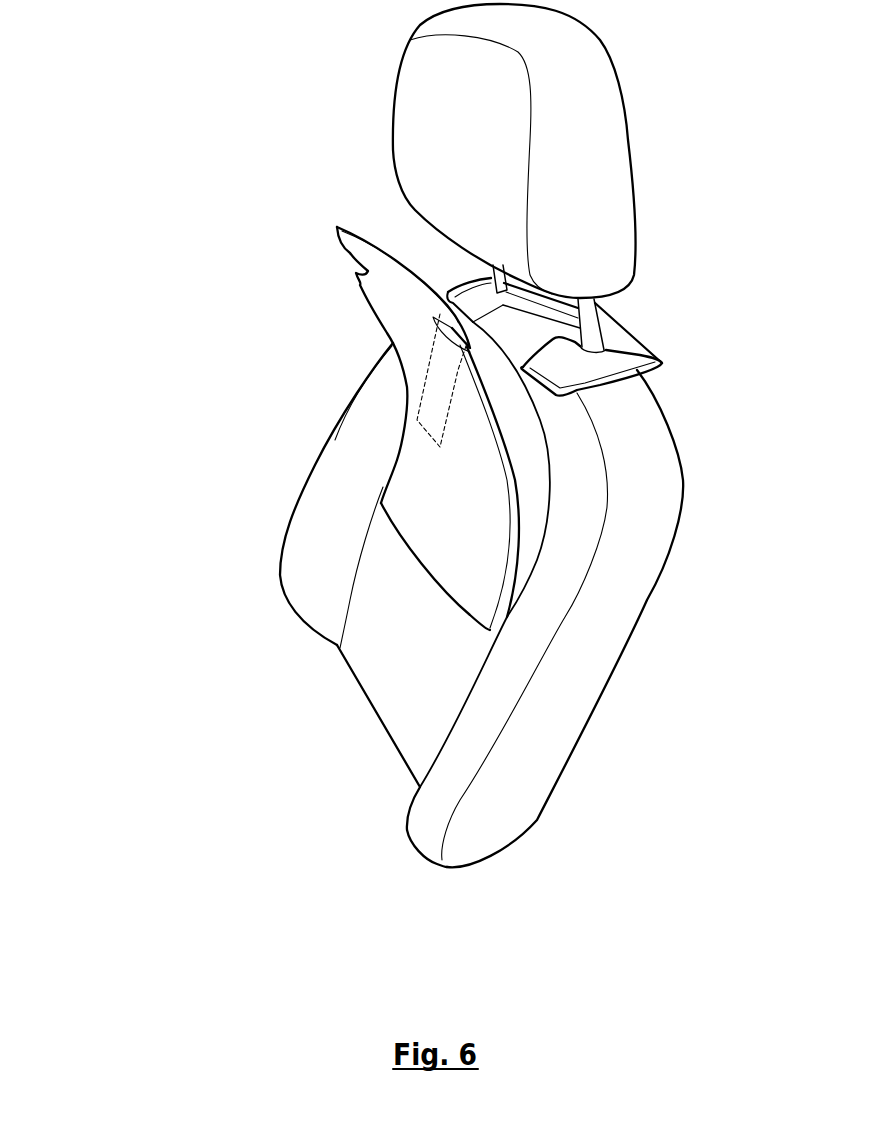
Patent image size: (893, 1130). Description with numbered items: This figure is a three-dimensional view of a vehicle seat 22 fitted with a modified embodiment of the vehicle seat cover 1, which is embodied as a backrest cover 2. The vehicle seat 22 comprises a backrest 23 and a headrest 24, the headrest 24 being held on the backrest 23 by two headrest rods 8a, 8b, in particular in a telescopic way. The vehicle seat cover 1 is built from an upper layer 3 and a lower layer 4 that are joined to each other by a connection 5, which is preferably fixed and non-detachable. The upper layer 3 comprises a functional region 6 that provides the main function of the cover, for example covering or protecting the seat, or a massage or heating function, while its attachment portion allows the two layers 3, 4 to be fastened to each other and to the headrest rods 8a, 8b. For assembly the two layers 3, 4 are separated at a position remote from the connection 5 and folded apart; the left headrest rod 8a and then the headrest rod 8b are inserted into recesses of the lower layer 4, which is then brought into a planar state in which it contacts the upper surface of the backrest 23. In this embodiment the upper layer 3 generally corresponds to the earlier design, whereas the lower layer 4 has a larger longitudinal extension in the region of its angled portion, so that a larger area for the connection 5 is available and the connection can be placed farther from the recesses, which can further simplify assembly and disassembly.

The vehicle seat cover 1 is at (412, 565).
The backrest cover 2 is at (412, 565).
The upper layer 3 is at (428, 428).
The functional region 6 is at (447, 524).
The lower layer 4 is at (629, 340).
The connection 5 is at (432, 400).
The headrest rod 8a is at (497, 262).
The headrest rod 8b is at (588, 296).
The vehicle seat 22 is at (213, 521).
The backrest 23 is at (573, 674).
The headrest 24 is at (587, 72).